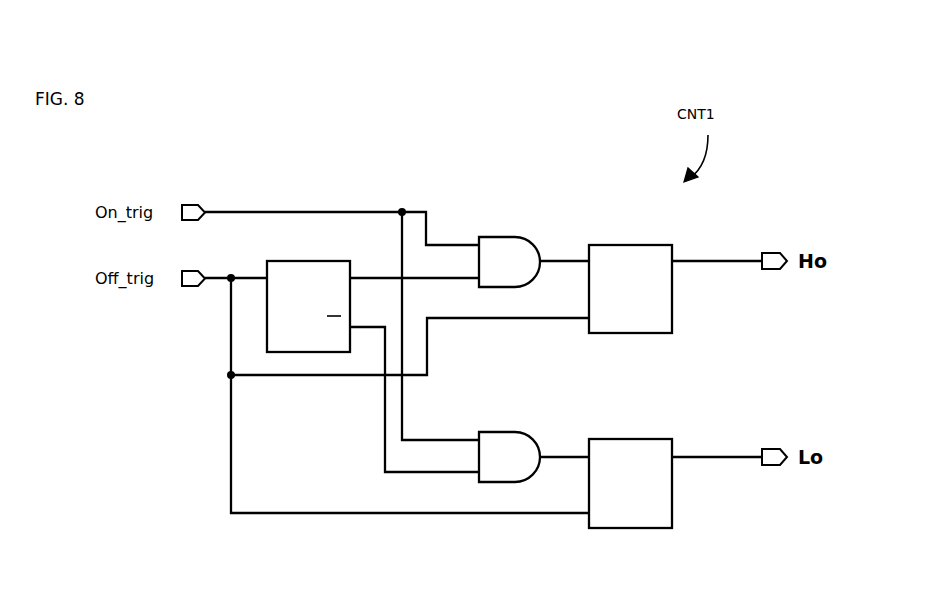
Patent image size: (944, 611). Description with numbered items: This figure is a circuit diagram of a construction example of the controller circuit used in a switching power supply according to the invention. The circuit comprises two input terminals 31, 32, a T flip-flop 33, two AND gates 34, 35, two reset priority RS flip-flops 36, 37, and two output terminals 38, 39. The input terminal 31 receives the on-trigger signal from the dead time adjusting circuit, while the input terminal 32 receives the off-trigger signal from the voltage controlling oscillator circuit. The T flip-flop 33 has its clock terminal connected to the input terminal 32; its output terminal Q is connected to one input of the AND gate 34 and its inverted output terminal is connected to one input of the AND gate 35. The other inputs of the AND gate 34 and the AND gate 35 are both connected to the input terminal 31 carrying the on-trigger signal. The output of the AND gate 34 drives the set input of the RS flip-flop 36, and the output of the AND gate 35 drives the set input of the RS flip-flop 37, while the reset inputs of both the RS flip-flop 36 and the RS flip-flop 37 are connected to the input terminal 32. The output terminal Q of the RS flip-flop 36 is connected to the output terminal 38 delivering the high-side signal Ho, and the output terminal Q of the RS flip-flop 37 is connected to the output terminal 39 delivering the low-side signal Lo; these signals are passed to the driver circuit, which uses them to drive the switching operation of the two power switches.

The input terminal 31 is at (192, 205).
The input terminal 32 is at (193, 270).
The T flip-flop 33 is at (305, 261).
The AND gate 34 is at (501, 237).
The AND gate 35 is at (501, 432).
The reset priority RS flip-flop 36 is at (625, 245).
The reset priority RS flip-flop 37 is at (625, 439).
The output terminal 38 is at (771, 253).
The output terminal 39 is at (771, 449).